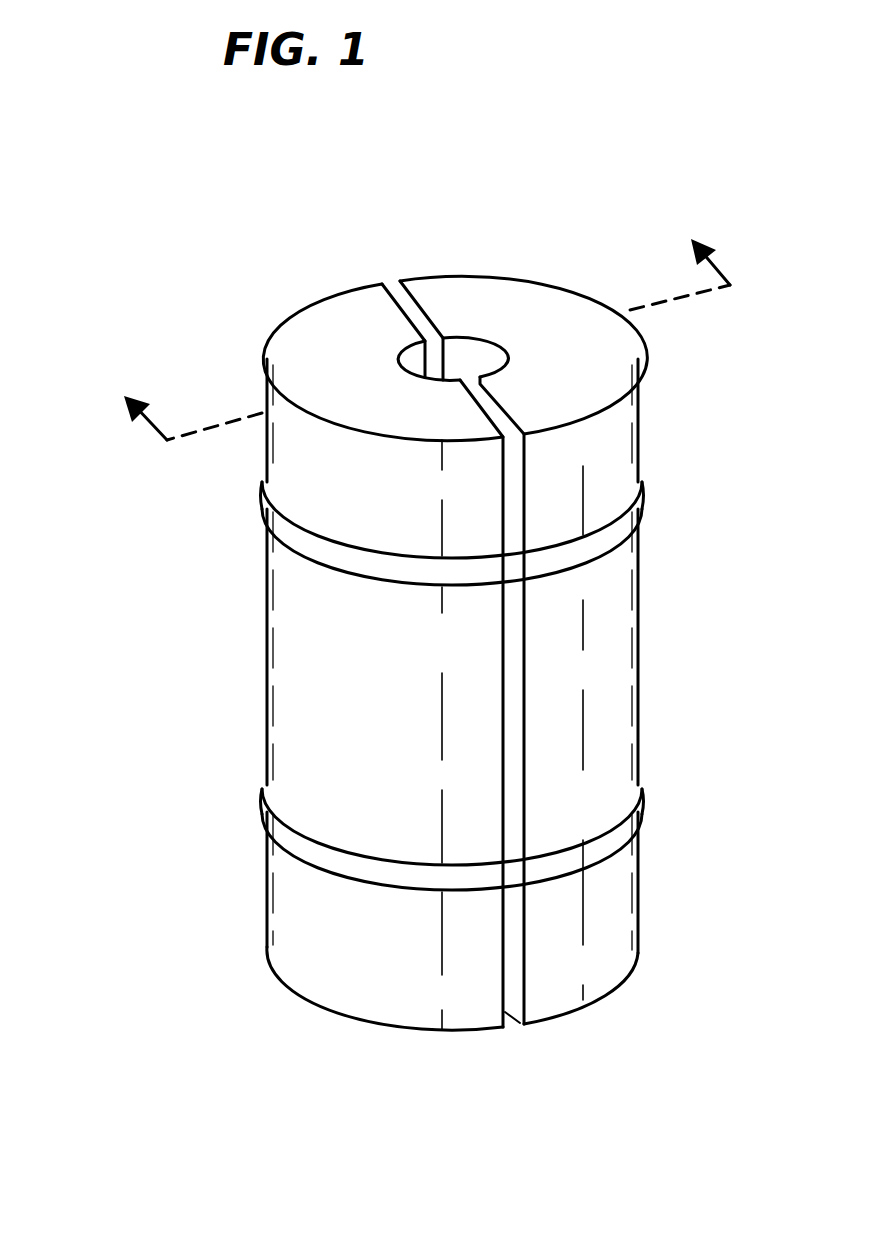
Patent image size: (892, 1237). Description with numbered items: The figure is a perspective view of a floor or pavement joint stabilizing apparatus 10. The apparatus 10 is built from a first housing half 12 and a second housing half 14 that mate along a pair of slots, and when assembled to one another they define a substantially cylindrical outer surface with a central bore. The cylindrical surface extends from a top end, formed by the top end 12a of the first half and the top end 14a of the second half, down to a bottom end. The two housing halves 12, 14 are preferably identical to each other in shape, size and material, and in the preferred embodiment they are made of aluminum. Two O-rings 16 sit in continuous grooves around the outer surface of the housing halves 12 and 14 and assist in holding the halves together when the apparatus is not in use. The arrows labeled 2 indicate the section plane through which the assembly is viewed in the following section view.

The floor or pavement joint stabilizing apparatus 10 is at (226, 174).
The section line 2- 2 is at (411, 321).
The first housing half 12 is at (613, 640).
The top end of first housing half 12a is at (528, 305).
The second housing half 14 is at (292, 675).
The top end of second housing half 14a is at (300, 333).
The O-rings 16 is at (613, 837).